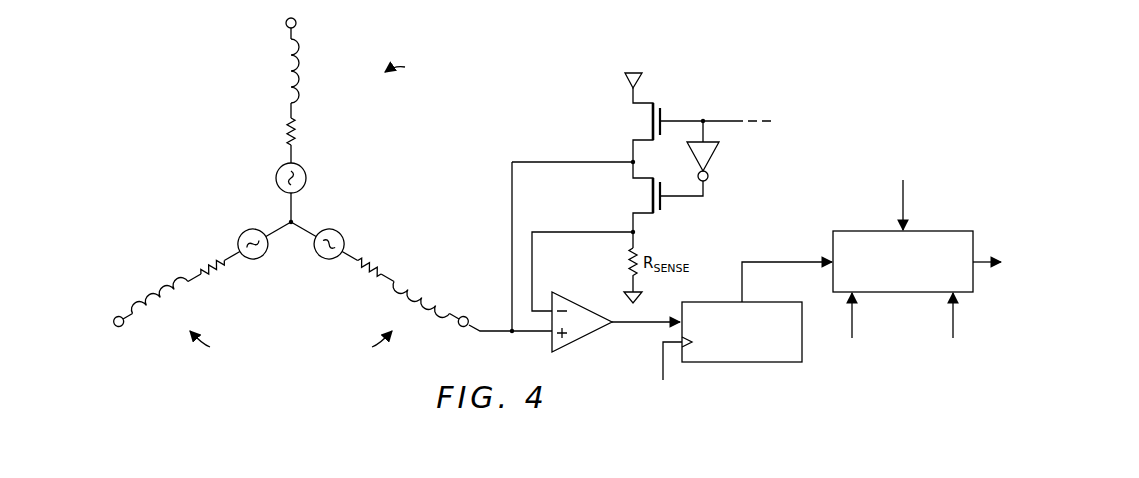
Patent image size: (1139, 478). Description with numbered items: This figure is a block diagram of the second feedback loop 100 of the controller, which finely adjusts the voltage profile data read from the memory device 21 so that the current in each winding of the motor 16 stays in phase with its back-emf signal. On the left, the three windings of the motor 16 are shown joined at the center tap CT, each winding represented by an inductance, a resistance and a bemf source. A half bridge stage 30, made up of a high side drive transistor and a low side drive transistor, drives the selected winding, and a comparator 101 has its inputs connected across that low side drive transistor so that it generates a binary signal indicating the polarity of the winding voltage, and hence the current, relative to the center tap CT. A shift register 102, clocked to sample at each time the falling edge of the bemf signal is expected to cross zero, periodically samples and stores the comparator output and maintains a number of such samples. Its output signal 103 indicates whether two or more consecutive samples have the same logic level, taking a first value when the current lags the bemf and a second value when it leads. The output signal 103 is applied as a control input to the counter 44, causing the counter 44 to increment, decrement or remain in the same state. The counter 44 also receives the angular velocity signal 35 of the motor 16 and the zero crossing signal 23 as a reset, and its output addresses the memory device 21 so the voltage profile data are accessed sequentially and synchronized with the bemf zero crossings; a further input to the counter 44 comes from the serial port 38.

The motor 16 is at (174, 133).
The half bridge stage 30 is at (697, 102).
The second feedback loop 100 is at (877, 80).
The comparator 101 is at (584, 342).
The shift register 102 is at (742, 362).
The output signal 103 is at (785, 260).
The counter 44 is at (867, 230).
The zero crossing (ZC) signal 23 is at (903, 206).
The angular velocity signal 35 is at (957, 315).
The memory device 21 is at (1036, 261).
The serial port 38 is at (851, 352).